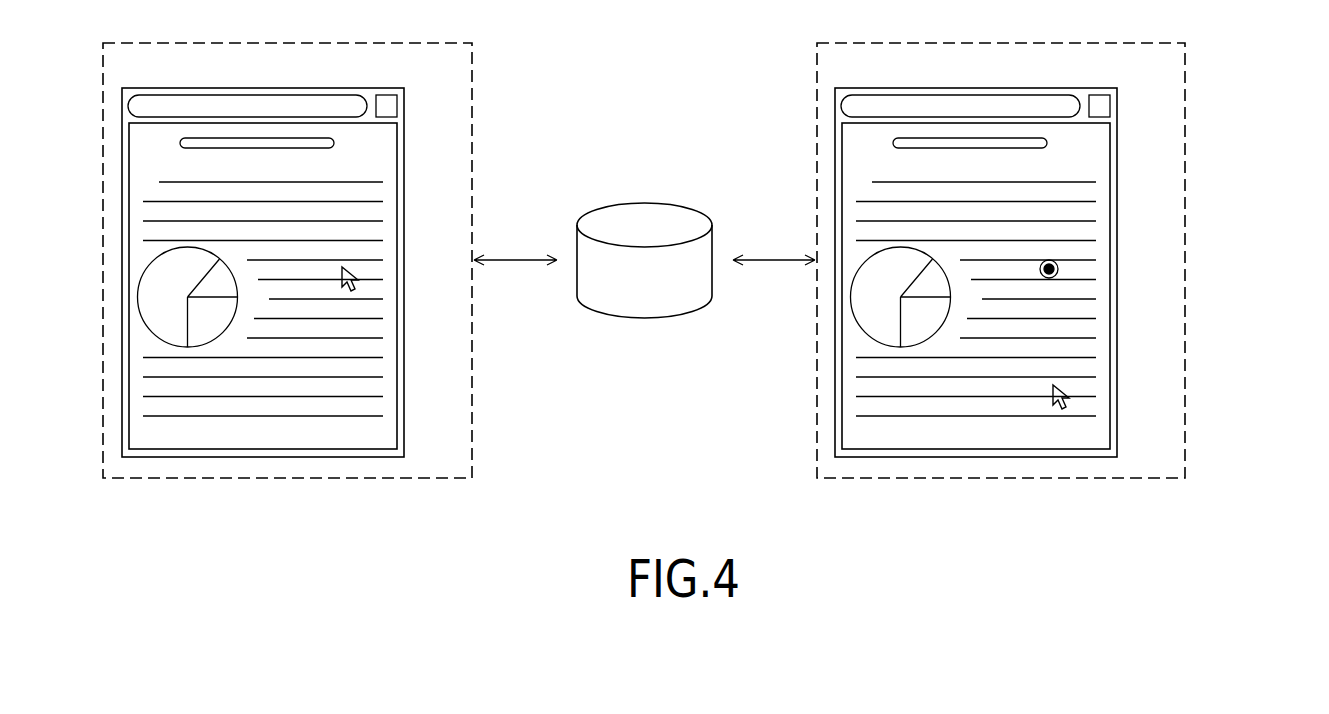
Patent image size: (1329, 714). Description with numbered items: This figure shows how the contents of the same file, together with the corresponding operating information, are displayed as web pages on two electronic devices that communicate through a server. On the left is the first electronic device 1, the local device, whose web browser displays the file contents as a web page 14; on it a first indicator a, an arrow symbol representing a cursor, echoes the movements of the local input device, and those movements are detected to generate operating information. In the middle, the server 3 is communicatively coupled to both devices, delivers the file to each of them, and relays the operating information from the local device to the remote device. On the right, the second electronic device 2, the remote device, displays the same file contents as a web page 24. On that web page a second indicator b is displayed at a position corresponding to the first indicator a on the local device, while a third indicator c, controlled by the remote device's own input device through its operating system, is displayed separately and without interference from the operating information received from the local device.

The first electronic device 1 is at (473, 58).
The web page 14 is at (405, 191).
The first indicator a is at (357, 270).
The server 3 is at (663, 200).
The second electronic device 2 is at (1186, 58).
The web page 24 is at (1118, 191).
The second indicator b is at (1062, 270).
The third indicator c is at (1068, 390).